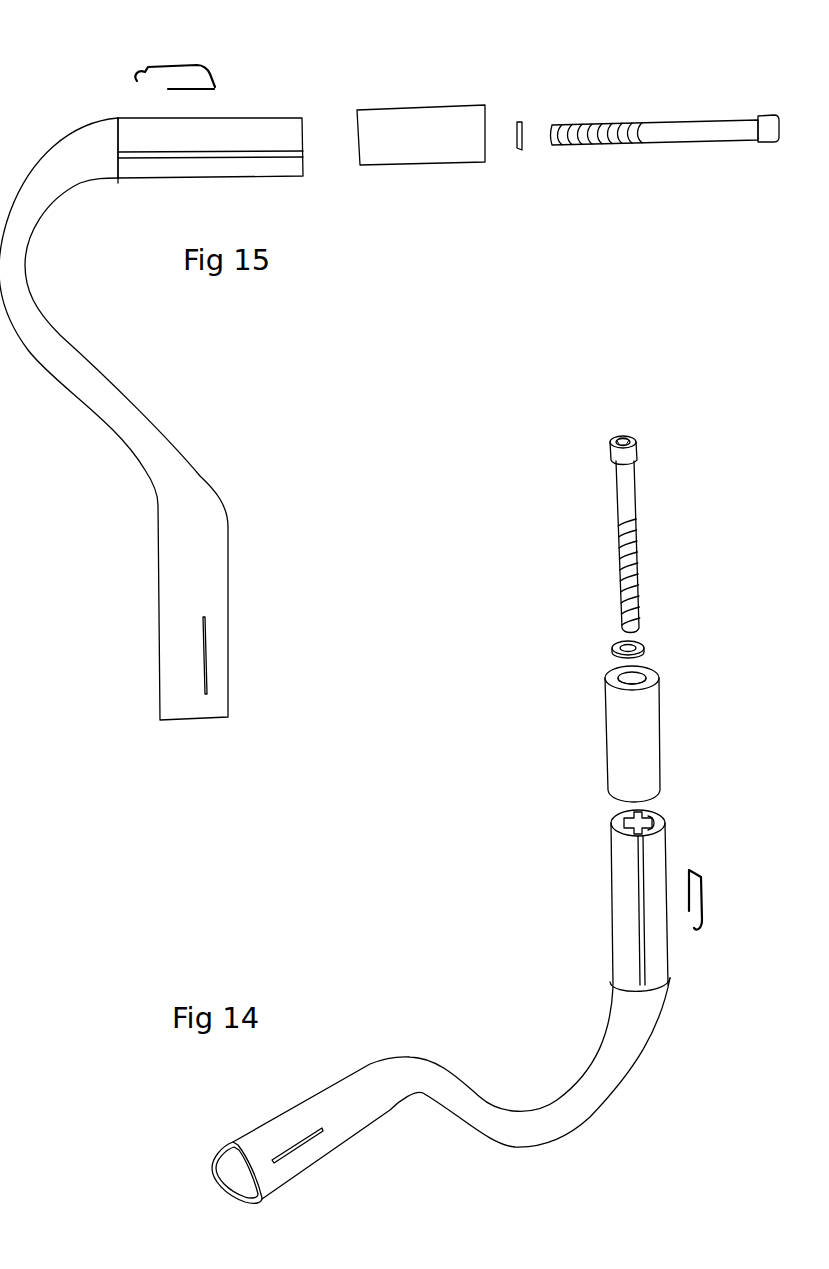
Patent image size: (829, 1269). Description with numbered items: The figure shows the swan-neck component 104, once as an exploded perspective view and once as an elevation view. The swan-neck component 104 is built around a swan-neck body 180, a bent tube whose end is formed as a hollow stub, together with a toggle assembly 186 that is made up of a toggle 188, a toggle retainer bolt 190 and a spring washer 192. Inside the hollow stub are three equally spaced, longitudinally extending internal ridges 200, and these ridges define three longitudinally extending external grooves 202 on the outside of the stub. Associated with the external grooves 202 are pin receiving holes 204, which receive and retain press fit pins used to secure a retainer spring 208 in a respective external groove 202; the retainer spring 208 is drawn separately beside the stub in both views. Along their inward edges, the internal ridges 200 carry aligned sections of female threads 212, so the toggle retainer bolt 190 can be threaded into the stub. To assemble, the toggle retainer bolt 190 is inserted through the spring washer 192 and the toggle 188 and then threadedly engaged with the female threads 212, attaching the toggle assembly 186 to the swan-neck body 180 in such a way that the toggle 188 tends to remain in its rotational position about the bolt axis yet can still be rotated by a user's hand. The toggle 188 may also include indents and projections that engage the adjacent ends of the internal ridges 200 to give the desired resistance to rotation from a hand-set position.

In FIG. 15, the swan-neck component 104 is at (193, 363).
In FIG. 14, the swan-neck component 104 is at (470, 1002).
In FIG. 15, the swan-neck body 180 is at (102, 369).
In FIG. 14, the swan-neck body 180 is at (517, 1147).
In FIG. 15, the toggle assembly 186 is at (568, 139).
In FIG. 14, the toggle assembly 186 is at (619, 612).
In FIG. 15, the toggle 188 is at (410, 167).
In FIG. 14, the toggle 188 is at (608, 738).
In FIG. 15, the toggle retainer bolt 190 is at (677, 140).
In FIG. 14, the toggle retainer bolt 190 is at (637, 500).
In FIG. 15, the spring washer 192 is at (517, 152).
In FIG. 14, the spring washer 192 is at (613, 648).
In FIG. 14, the internal ridges 200 is at (596, 880).
In FIG. 14, the external grooves 202 is at (642, 937).
In FIG. 15, the pin receiving holes 204 is at (138, 128).
In FIG. 15, the retainer spring 208 is at (193, 63).
In FIG. 14, the retainer spring 208 is at (703, 897).
In FIG. 14, the female threads 212 is at (617, 828).